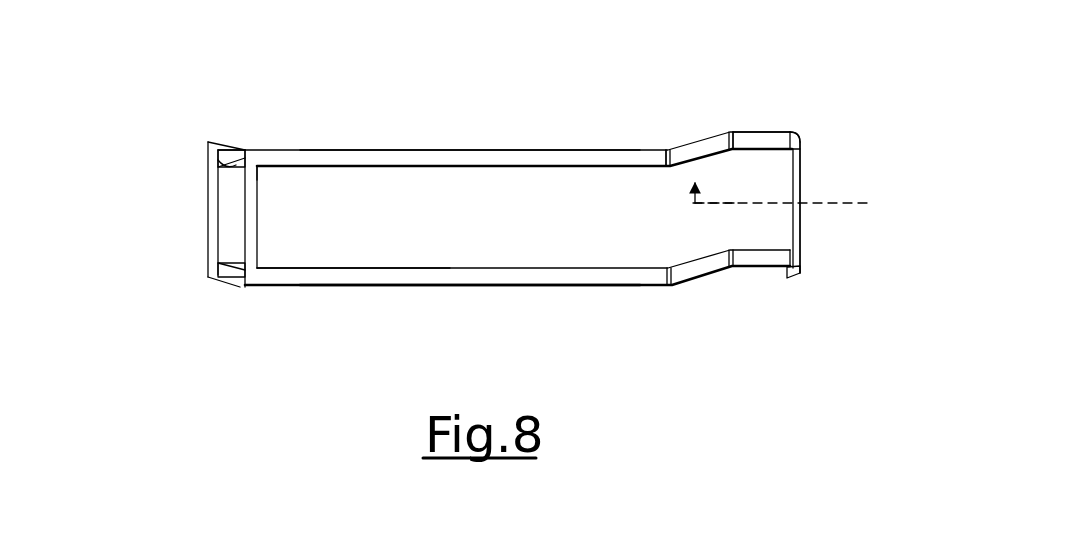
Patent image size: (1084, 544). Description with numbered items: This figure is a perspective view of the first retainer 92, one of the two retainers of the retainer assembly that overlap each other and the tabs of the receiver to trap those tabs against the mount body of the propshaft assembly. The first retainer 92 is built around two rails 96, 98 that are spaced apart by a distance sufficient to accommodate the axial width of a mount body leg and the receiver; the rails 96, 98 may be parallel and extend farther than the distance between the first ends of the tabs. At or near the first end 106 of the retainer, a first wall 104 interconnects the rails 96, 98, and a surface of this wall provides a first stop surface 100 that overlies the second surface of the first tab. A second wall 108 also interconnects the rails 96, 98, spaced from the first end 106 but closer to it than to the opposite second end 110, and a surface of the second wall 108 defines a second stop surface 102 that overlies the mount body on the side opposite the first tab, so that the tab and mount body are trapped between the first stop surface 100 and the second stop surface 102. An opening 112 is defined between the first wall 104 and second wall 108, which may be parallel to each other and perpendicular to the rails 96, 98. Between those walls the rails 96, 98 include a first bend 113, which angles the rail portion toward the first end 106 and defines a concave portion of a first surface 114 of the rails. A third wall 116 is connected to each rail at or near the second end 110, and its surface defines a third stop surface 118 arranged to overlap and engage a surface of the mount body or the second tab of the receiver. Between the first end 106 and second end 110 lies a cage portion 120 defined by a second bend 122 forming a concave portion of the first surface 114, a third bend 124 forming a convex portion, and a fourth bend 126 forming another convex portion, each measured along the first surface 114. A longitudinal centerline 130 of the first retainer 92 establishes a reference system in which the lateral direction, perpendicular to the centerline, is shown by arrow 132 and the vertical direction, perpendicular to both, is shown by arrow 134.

The first retainer 92 is at (797, 117).
The rail 96 is at (490, 158).
The rail 98 is at (512, 275).
The first stop surface 100 is at (226, 216).
The second stop surface 102 is at (252, 230).
The first wall 104 is at (205, 176).
The first end 106 is at (163, 278).
The second wall 108 is at (260, 210).
The second end 110 is at (800, 274).
The opening 112 is at (222, 163).
The first bend 113 is at (245, 150).
The first surface 114 is at (323, 157).
The third wall 116 is at (800, 187).
The third stop surface 118 is at (787, 164).
The cage portion 120 is at (767, 126).
The second bend 122 is at (668, 148).
The third bend 124 is at (733, 131).
The fourth bend 126 is at (800, 139).
The longitudinal centerline 130 is at (843, 203).
The arrow 132 is at (692, 192).
The arrow 134 is at (702, 189).